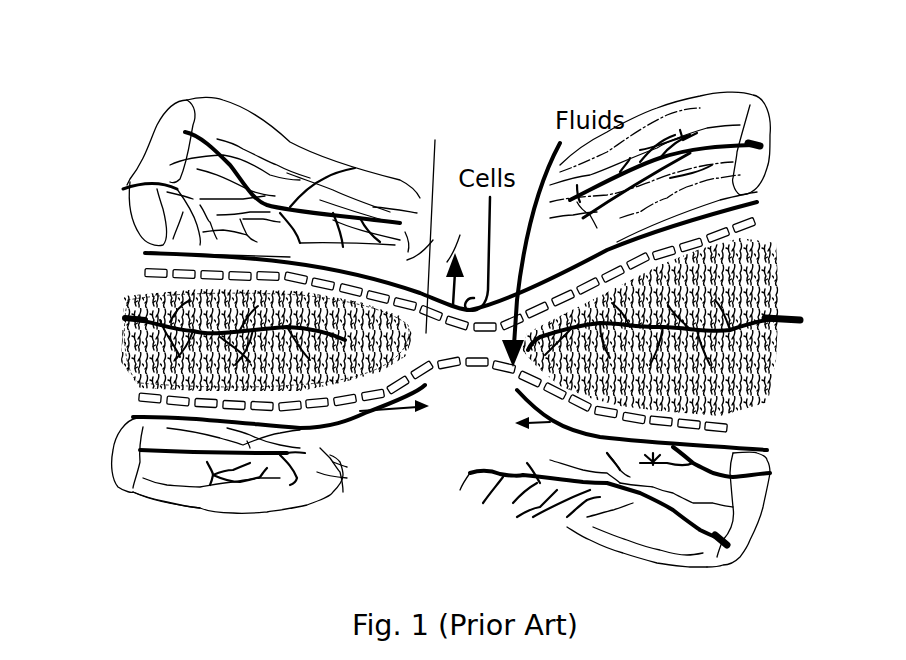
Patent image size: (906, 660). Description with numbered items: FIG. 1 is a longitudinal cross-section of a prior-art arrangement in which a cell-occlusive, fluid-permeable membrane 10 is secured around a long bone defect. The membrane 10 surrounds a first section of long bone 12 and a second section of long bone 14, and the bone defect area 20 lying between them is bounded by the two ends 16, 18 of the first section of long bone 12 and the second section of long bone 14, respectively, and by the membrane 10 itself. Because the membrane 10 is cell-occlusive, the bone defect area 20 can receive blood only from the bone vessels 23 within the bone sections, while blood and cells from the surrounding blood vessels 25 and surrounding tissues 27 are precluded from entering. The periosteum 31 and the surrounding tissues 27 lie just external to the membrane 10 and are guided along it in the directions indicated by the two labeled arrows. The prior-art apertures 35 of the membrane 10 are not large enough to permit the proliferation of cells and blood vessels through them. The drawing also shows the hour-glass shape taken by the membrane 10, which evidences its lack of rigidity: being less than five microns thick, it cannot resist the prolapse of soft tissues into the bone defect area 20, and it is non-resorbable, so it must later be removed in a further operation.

The cell-occlusive, fluid-permeable membrane 10 is at (750, 227).
The first section of long bone 12 is at (137, 343).
The second section of long bone 14 is at (757, 377).
The end of first section of long bone 16 is at (403, 343).
The end of second section of long bone 18 is at (517, 397).
The bone defect area 20 is at (438, 221).
The bone vessels 23 is at (137, 313).
The surrounding blood vessels 25 is at (658, 152).
The surrounding tissues 27 is at (730, 133).
The periosteum 31 is at (757, 200).
The apertures 35 is at (203, 267).